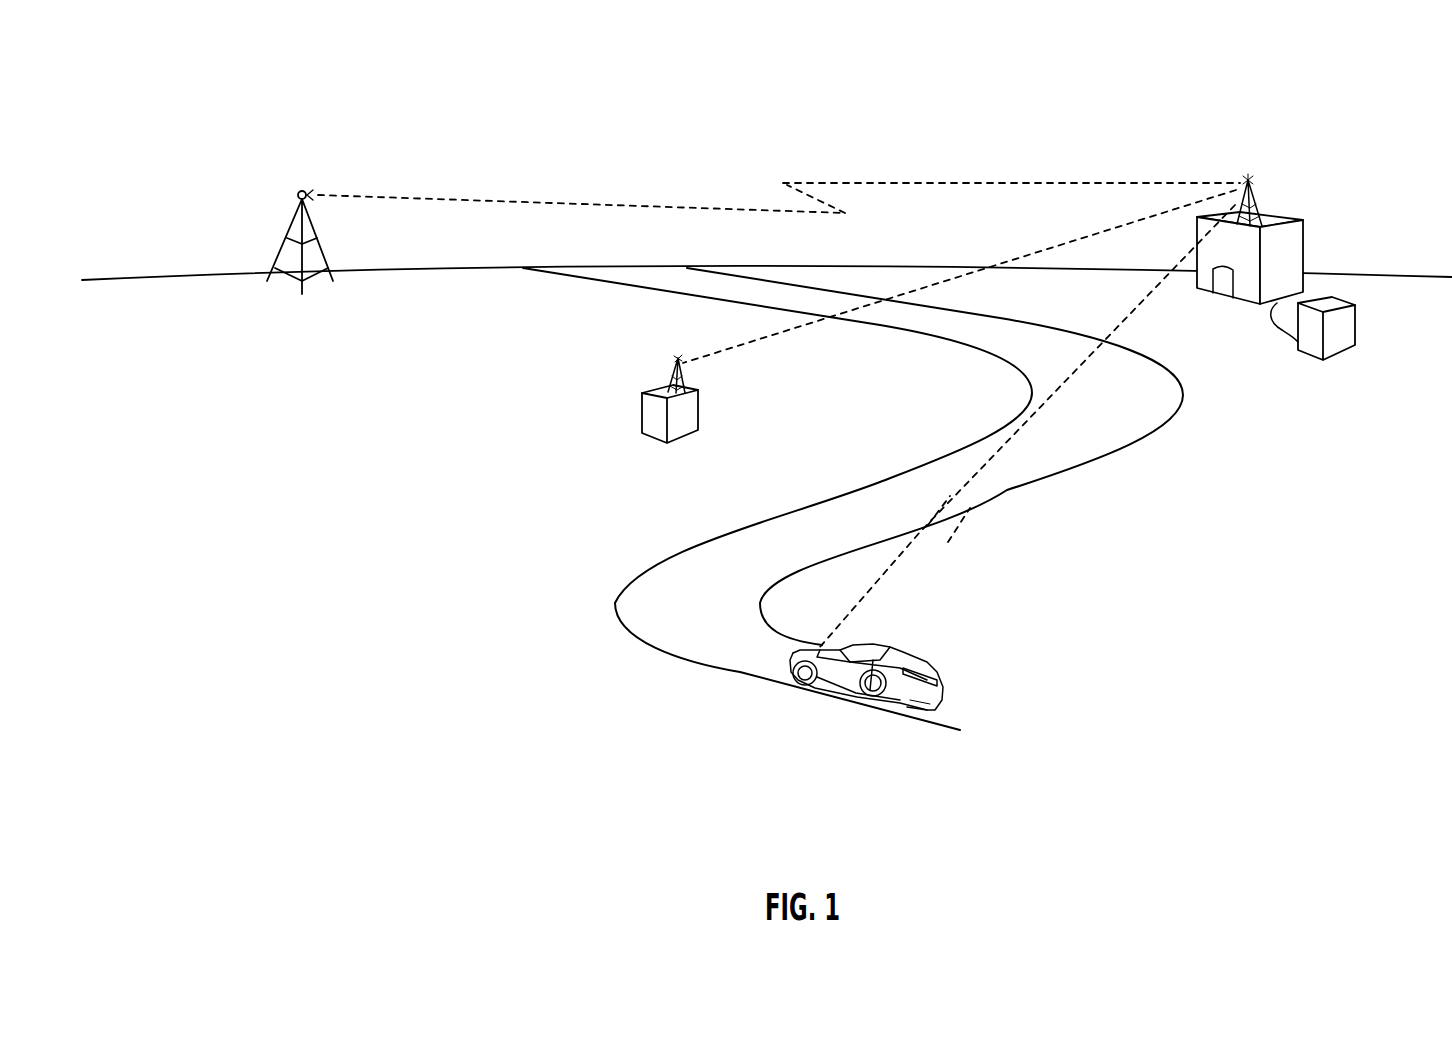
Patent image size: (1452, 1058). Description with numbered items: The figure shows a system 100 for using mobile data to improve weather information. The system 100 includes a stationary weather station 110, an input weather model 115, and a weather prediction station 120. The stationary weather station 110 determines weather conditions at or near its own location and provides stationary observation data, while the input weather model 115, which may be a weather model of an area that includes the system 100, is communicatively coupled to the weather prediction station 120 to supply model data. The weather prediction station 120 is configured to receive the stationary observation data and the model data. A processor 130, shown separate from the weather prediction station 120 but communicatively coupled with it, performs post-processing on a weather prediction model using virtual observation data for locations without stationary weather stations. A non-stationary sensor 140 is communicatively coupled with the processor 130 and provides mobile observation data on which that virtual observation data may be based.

The system 100 is at (203, 86).
The stationary weather station 110 is at (642, 395).
The input weather model 115 is at (293, 229).
The weather prediction station 120 is at (1290, 220).
The processor 130 is at (1333, 297).
The non-stationary sensor 140 is at (925, 662).